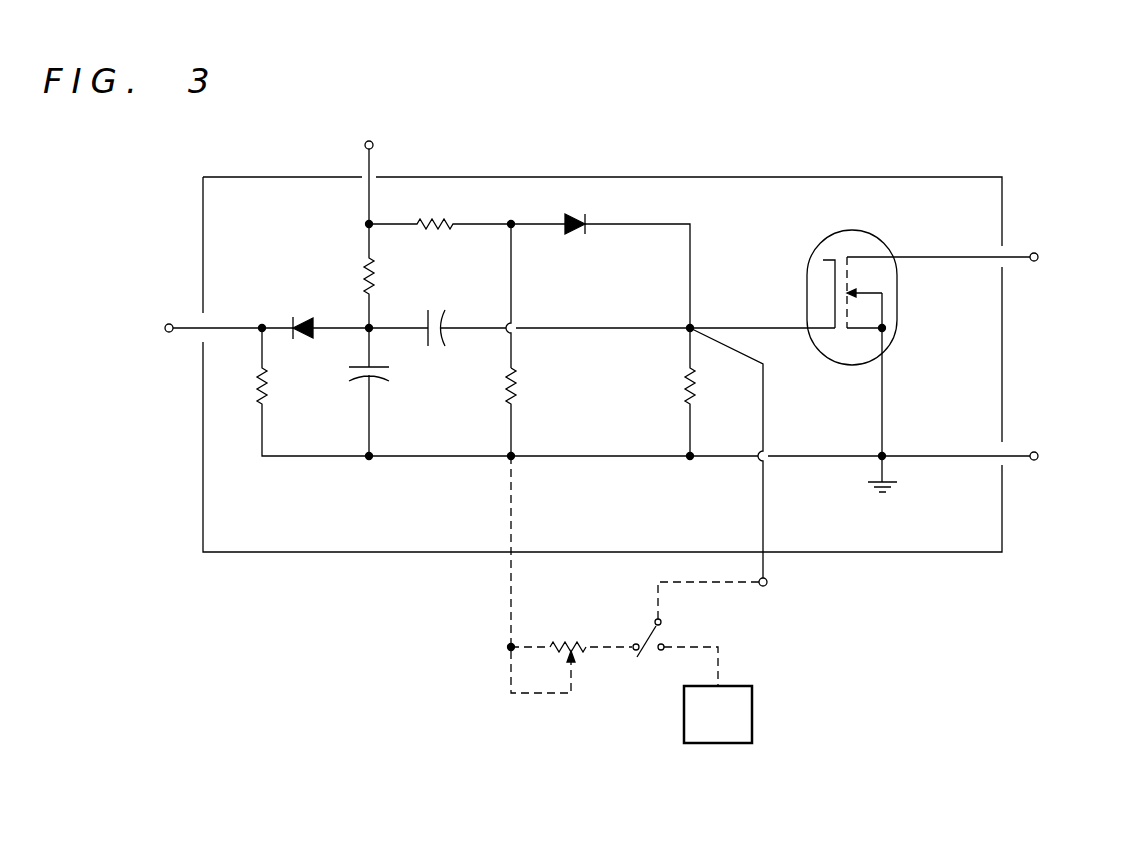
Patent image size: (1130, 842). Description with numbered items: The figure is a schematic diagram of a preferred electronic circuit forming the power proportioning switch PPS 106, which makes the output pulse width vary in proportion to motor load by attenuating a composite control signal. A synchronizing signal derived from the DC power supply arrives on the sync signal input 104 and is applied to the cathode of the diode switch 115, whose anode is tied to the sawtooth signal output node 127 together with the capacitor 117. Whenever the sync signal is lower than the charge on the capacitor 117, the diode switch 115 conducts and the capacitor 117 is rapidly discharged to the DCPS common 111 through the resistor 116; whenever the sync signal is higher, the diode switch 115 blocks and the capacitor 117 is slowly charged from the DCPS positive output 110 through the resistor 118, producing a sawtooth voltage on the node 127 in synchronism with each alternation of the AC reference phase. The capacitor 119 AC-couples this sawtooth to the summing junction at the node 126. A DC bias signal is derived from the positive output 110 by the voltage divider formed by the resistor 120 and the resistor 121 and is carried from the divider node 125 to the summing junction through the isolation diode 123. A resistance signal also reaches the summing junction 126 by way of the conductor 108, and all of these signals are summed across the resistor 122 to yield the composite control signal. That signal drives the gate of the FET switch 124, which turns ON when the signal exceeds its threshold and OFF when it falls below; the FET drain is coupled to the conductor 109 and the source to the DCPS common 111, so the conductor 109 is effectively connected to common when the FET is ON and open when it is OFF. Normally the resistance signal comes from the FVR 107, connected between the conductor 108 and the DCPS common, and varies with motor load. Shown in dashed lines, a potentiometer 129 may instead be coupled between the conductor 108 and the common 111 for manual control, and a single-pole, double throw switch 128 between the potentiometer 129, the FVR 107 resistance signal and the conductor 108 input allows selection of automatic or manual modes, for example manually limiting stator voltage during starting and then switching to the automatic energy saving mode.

The sync signal input 104 is at (166, 325).
The PPS 106 is at (725, 177).
The FVR 107 is at (752, 690).
The conductor 108 is at (768, 584).
The conductor 109 is at (1038, 255).
The DCPS positive output 110 is at (373, 142).
The DCPS common 111 is at (1038, 453).
The diode switch 115 is at (292, 321).
The resistor 116 is at (259, 377).
The capacitor 117 is at (348, 371).
The resistor 118 is at (365, 269).
The capacitor 119 is at (442, 348).
The resistor 120 is at (447, 222).
The resistor 121 is at (520, 372).
The resistor 122 is at (700, 396).
The isolation diode 123 is at (587, 232).
The FET switch 124 is at (888, 243).
The divider node 125 is at (516, 220).
The summing junction node 126 is at (704, 318).
The sawtooth signal output node 127 is at (372, 324).
The single-pole, double throw switch 128 is at (662, 622).
The potentiometer 129 is at (573, 630).